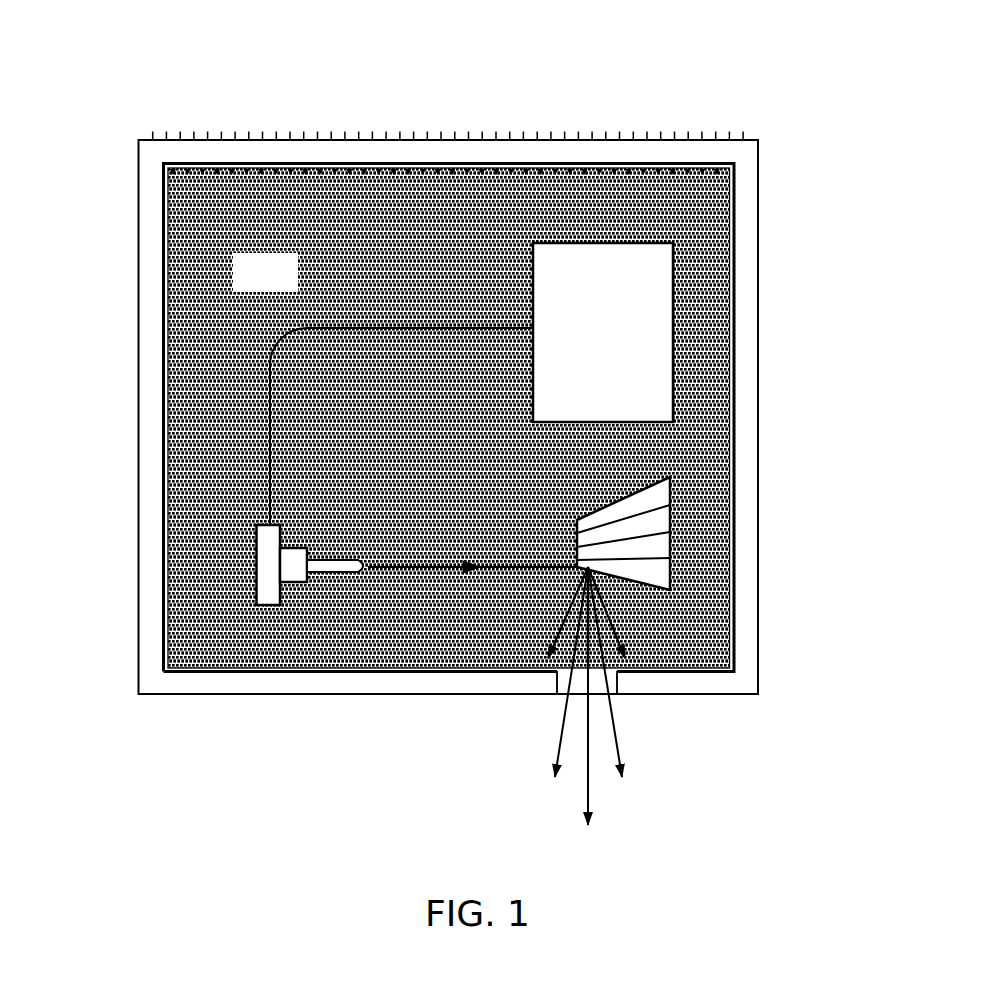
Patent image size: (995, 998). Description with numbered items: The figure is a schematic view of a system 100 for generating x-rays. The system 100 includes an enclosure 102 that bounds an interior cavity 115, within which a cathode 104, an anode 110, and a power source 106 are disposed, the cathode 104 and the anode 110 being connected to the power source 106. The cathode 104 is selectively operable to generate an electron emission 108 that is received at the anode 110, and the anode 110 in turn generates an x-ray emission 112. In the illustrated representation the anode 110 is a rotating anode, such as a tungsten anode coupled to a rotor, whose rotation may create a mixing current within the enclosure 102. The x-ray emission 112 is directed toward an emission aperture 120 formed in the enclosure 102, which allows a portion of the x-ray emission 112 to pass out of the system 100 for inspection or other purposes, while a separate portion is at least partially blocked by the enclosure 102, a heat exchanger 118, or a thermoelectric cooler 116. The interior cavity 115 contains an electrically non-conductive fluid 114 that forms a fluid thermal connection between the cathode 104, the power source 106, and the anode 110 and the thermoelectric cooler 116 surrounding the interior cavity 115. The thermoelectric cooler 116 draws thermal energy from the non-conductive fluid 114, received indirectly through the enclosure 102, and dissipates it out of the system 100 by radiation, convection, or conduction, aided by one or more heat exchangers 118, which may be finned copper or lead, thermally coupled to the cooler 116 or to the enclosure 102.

The system 100 is at (138, 58).
The enclosure 102 is at (730, 221).
The cathode 104 is at (258, 604).
The power source 106 is at (595, 243).
The electron emission 108 is at (469, 576).
The anode 110 is at (670, 528).
The x-ray emission 112 is at (600, 618).
The electrically non-conductive fluid 114 is at (430, 242).
The interior cavity 115 is at (291, 286).
The thermoelectric cooler 116 is at (758, 358).
The heat exchanger 118 is at (260, 170).
The emission aperture 120 is at (617, 695).